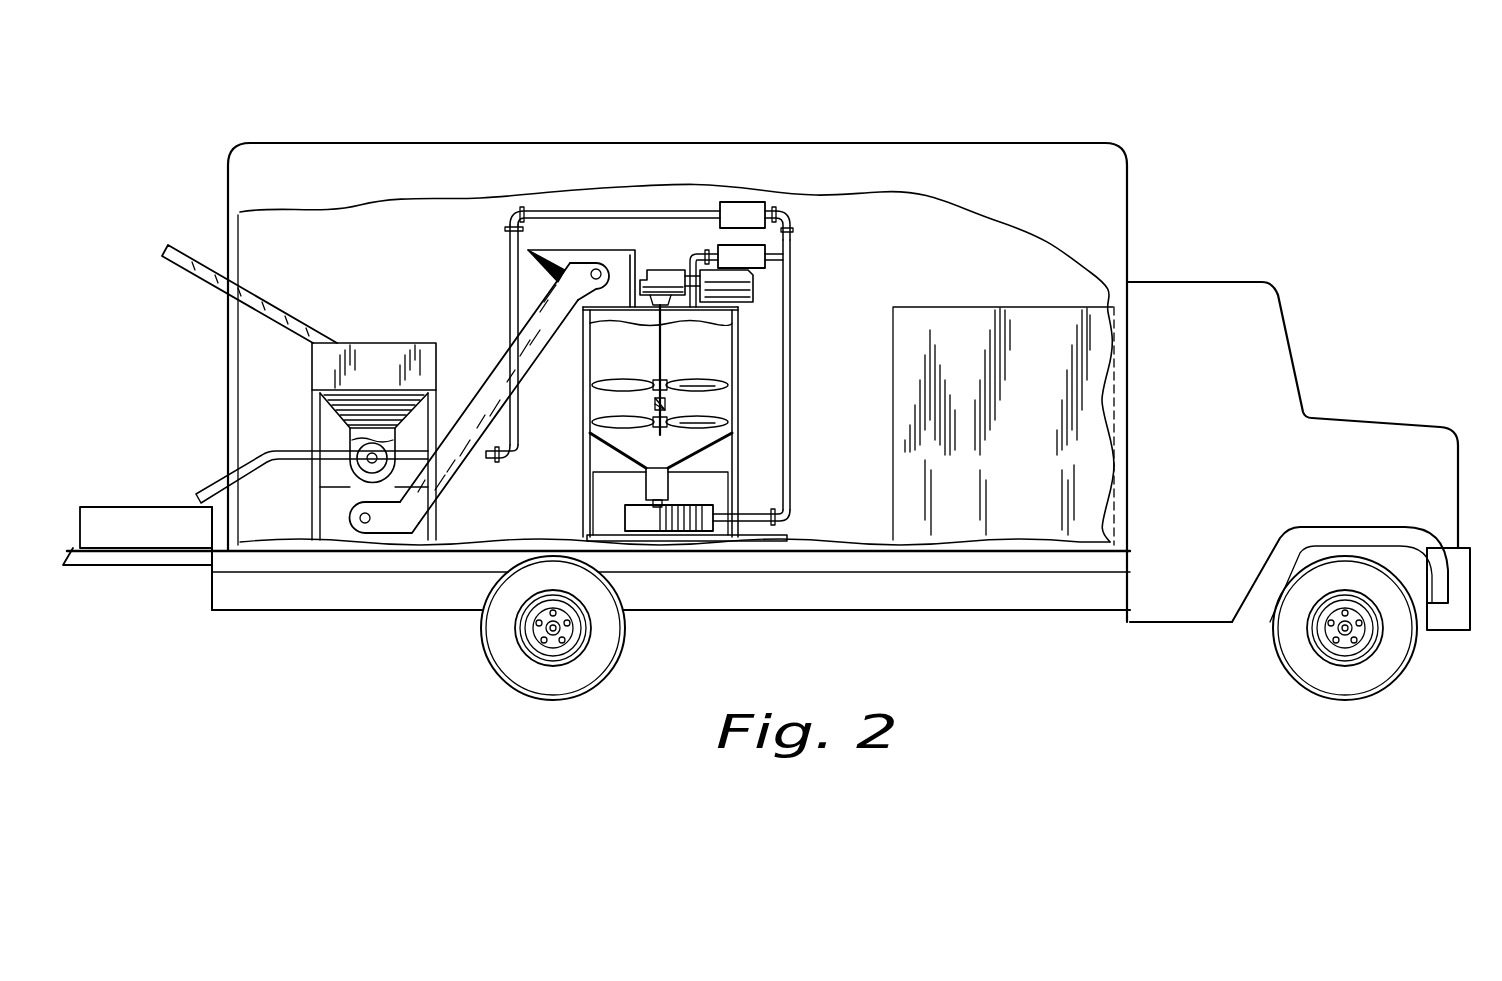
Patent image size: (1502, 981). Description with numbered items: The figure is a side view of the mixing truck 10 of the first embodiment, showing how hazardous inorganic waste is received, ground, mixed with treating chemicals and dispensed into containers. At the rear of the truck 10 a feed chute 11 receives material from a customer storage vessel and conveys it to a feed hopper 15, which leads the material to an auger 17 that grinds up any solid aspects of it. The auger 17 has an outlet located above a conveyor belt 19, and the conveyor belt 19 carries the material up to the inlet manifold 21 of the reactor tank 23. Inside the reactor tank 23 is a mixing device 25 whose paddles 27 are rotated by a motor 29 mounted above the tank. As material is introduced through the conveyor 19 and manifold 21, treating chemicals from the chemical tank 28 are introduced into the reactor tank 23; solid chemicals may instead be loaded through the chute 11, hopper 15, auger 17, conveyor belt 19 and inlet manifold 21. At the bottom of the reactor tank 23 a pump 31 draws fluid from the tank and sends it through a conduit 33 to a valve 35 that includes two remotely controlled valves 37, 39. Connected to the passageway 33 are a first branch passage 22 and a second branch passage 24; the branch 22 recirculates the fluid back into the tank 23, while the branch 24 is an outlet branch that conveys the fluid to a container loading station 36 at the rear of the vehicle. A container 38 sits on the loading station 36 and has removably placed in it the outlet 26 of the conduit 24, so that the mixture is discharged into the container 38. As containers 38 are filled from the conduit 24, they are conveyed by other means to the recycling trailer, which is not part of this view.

The mixing truck 10 is at (1238, 132).
The feed chute 11 is at (176, 250).
The feed hopper 15 is at (374, 352).
The auger 17 is at (360, 474).
The conveyor belt 19 is at (458, 455).
The inlet manifold 21 is at (614, 250).
The first branch passage 22 is at (795, 272).
The reactor tank 23 is at (583, 394).
The second branch passage 24 is at (562, 210).
The mixing device 25 is at (668, 350).
The outlet 26 is at (194, 494).
The paddles 27 is at (724, 420).
The chemical tank 28 is at (1029, 426).
The motor 29 is at (667, 266).
The pump 31 is at (676, 531).
The conduit 33 is at (794, 410).
The valve 35 is at (761, 203).
The container loading station 36 is at (156, 555).
The remotely controlled valve 37 is at (743, 202).
The container 38 is at (100, 524).
The remotely controlled valve 39 is at (760, 247).